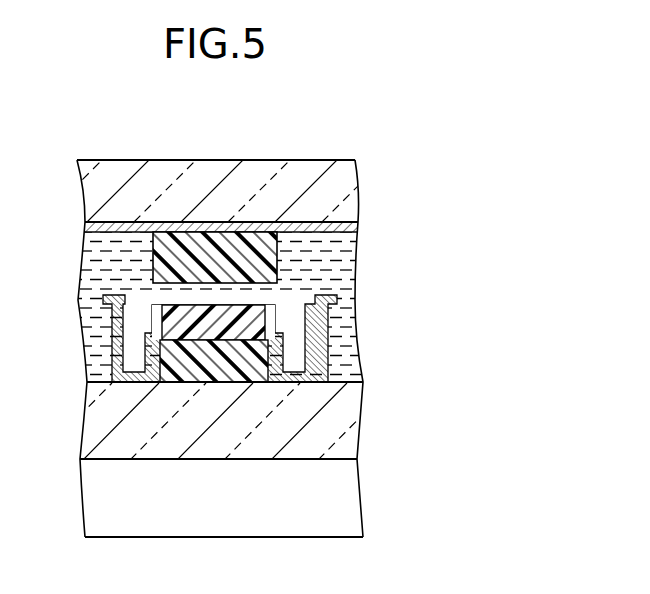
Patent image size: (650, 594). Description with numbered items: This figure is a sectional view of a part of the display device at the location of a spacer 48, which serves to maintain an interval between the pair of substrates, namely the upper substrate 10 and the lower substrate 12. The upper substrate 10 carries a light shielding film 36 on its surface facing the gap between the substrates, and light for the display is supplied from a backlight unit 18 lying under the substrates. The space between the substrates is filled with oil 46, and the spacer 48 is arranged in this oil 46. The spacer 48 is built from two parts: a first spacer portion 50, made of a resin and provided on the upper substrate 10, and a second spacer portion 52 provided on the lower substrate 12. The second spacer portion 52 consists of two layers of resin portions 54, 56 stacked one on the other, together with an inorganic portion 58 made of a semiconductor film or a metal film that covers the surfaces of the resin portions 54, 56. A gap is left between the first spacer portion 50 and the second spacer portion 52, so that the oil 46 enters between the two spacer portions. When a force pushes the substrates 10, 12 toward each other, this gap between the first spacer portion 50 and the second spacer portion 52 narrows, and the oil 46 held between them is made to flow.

The upper substrate 10 is at (347, 183).
The lower substrate 12 is at (353, 421).
The backlight unit 18 is at (348, 496).
The light shielding film 36 is at (355, 226).
The oil 46 is at (308, 245).
The spacer 48 is at (322, 301).
The first spacer portion 50 is at (265, 256).
The second spacer portion 52 is at (295, 319).
The resin portion 54 is at (260, 362).
The resin portion 56 is at (247, 325).
The inorganic portion 58 is at (262, 299).